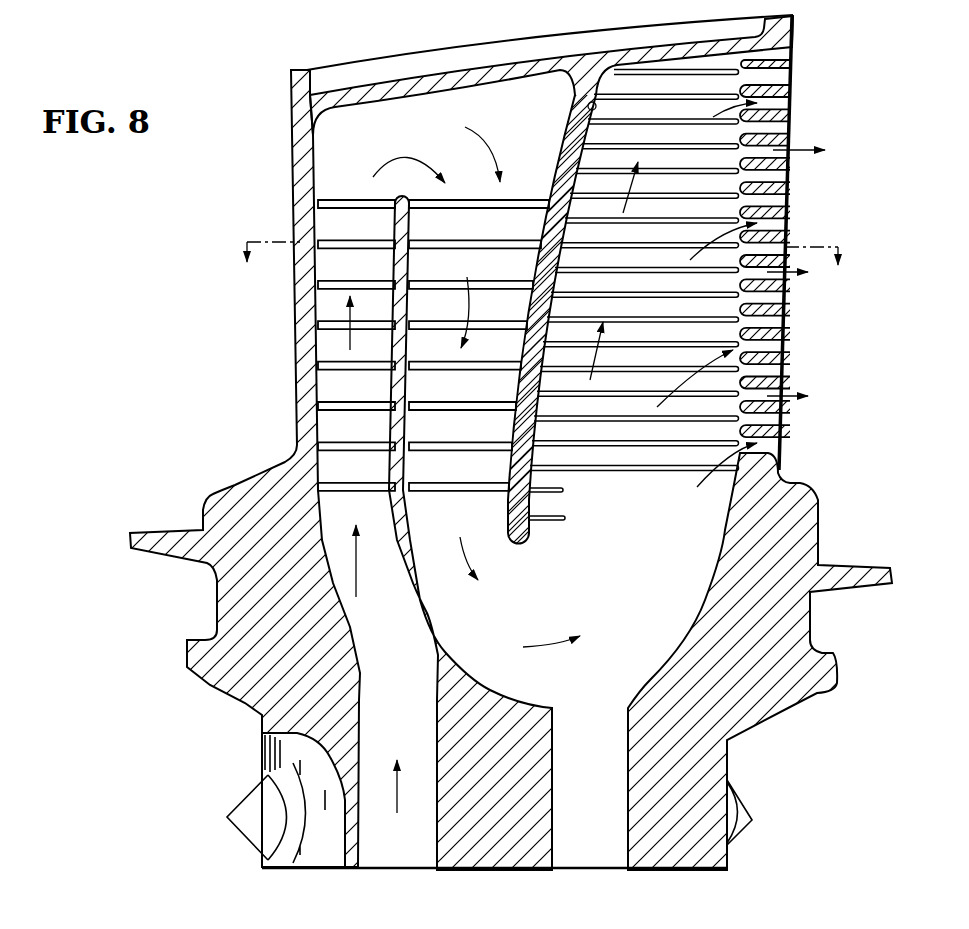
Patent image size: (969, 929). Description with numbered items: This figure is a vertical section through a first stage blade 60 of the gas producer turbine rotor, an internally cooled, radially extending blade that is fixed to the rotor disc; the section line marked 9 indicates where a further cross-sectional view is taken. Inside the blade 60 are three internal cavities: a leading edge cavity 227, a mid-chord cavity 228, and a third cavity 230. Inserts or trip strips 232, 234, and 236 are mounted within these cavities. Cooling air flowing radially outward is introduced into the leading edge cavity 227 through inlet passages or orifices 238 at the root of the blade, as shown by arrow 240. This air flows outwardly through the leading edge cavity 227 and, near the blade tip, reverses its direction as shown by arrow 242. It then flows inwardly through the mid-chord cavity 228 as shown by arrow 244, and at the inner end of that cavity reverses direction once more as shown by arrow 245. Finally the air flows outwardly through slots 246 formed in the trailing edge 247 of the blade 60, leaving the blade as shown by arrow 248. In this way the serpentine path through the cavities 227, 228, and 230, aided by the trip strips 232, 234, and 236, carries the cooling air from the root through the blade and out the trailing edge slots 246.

The blade 60 is at (289, 86).
The leading edge cavity 227 is at (316, 300).
The mid-chord cavity 228 is at (384, 381).
The internal cavity 230 is at (588, 106).
The insert or trip strip 232 is at (323, 263).
The insert or trip strip 234 is at (533, 218).
The insert or trip strip 236 is at (577, 460).
The inlet passage or orifice 238 is at (427, 738).
The arrow 240 is at (362, 572).
The arrow 242 is at (400, 150).
The arrow 244 is at (466, 305).
The arrow 245 is at (548, 640).
The slot 246 is at (789, 104).
The trailing edge 247 is at (786, 308).
The arrow 248 is at (797, 152).
The section line 9- 9 is at (541, 243).